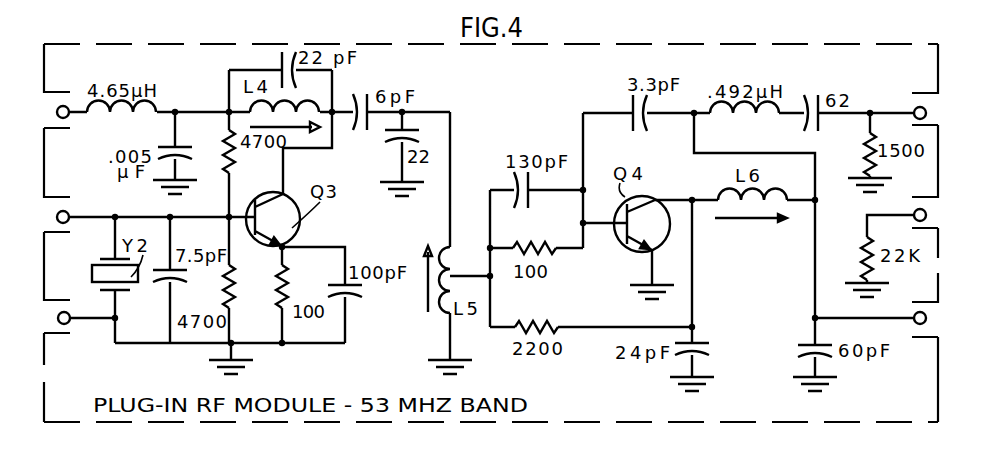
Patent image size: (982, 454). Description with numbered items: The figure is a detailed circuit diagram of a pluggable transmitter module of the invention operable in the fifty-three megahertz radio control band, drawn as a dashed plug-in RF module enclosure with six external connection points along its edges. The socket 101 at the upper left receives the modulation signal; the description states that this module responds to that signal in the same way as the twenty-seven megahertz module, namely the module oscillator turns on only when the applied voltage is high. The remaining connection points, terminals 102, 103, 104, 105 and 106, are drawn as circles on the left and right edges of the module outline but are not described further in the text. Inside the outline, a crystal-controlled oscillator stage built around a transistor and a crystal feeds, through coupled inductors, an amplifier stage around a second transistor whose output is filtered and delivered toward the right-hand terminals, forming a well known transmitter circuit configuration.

The socket 101 is at (69, 103).
The RF output terminal 102 is at (916, 108).
The supply terminal 103 is at (914, 210).
The terminal 104 is at (914, 313).
The terminal 105 is at (69, 323).
The terminal 106 is at (68, 213).